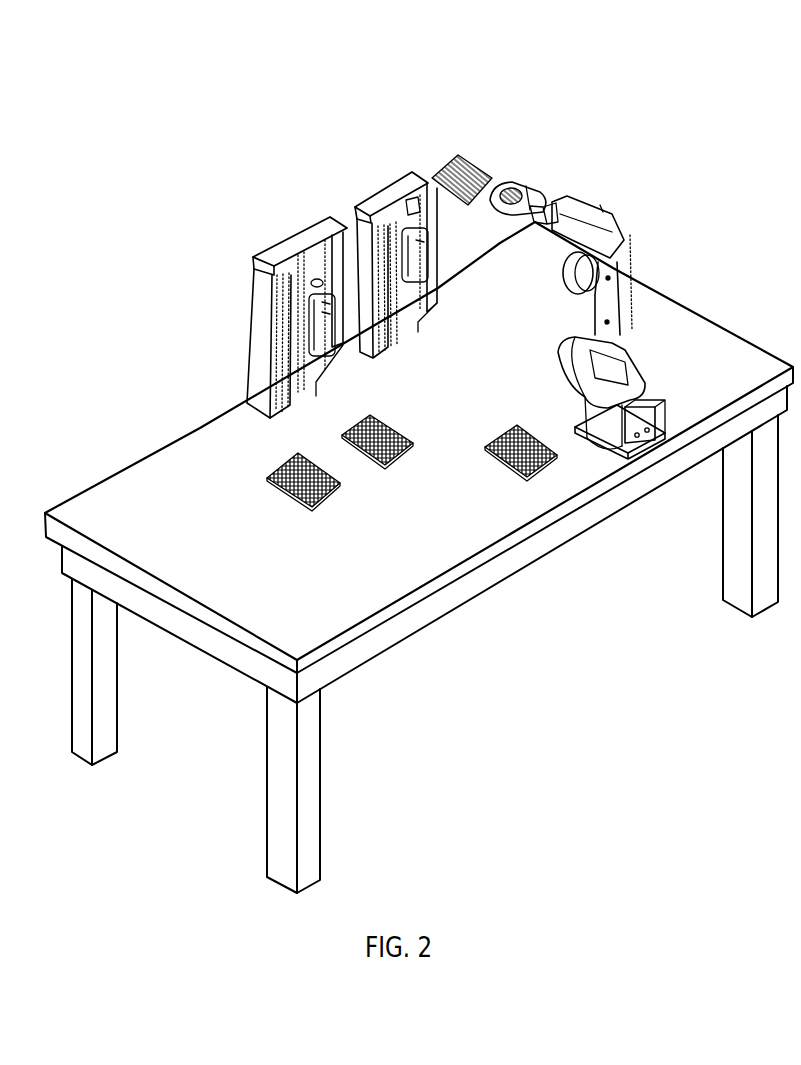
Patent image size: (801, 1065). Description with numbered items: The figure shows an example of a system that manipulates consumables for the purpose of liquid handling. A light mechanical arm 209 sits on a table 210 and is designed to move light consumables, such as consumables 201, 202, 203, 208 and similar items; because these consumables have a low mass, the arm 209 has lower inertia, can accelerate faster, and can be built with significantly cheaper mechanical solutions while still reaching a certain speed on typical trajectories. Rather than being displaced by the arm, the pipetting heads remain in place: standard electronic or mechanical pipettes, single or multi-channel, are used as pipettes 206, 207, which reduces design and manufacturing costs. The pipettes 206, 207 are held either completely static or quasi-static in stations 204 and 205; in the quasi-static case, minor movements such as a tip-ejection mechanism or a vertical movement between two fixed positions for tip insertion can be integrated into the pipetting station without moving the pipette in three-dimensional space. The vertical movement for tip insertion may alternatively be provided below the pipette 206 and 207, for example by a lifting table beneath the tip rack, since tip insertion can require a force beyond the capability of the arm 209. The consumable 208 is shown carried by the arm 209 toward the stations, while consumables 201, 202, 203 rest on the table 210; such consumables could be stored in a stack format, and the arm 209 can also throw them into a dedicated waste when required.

The consumable 201 is at (303, 492).
The consumable 202 is at (377, 450).
The consumable 203 is at (521, 461).
The pipetting station 204 is at (297, 315).
The pipetting station 205 is at (392, 263).
The pipette 206 is at (320, 320).
The pipette 207 is at (415, 240).
The consumable 208 is at (487, 166).
The light mechanical arm 209 is at (658, 412).
The table 210 is at (300, 624).